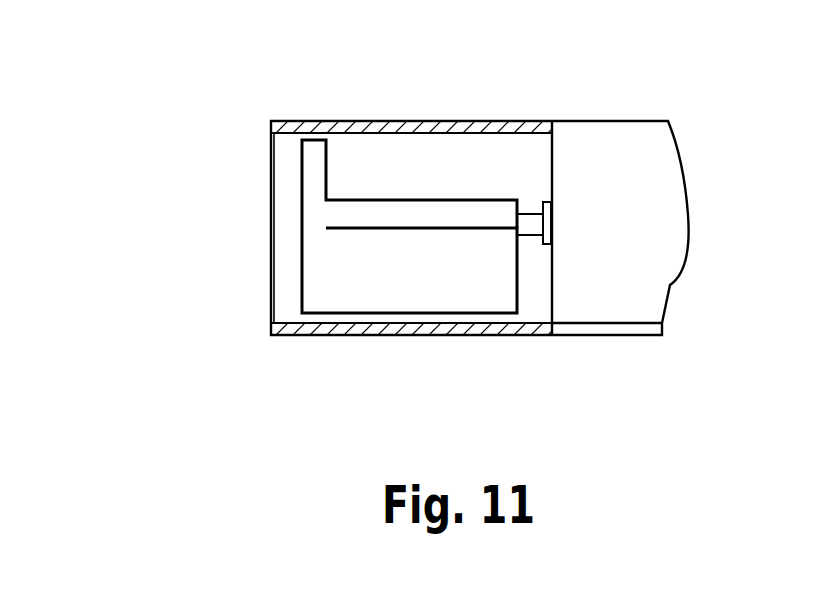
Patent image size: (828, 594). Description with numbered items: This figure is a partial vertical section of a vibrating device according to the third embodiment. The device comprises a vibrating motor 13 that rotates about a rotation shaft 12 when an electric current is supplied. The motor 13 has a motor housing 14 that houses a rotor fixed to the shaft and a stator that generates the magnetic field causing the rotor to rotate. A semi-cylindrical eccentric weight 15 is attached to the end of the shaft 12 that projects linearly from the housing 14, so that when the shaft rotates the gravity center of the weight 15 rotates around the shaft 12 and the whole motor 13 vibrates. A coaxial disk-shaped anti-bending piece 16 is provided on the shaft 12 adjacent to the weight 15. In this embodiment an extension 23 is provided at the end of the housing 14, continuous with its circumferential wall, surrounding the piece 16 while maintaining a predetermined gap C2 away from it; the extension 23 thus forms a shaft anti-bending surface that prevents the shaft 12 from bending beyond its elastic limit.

The rotation shaft 12 is at (138, 242).
The vibrating motor 13 is at (664, 106).
The motor housing 14 is at (600, 128).
The eccentric weight 15 is at (408, 293).
The anti-bending piece 16 is at (308, 180).
The extension 23 is at (415, 121).
The gap C2 is at (329, 121).